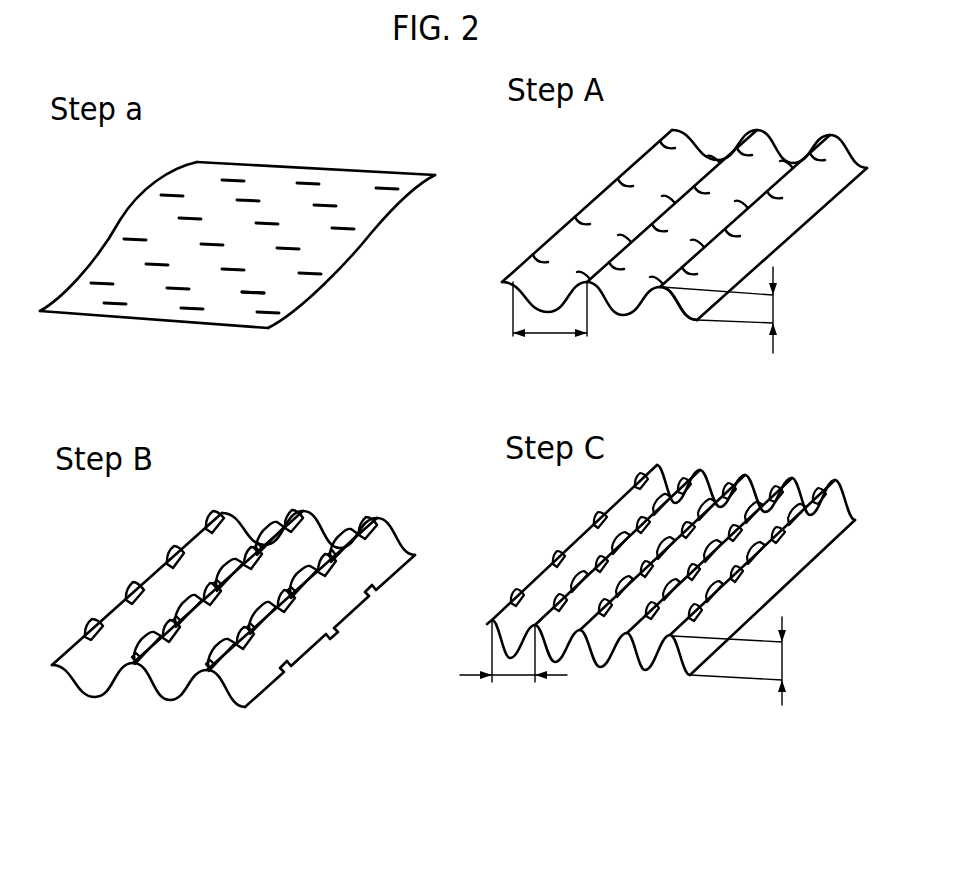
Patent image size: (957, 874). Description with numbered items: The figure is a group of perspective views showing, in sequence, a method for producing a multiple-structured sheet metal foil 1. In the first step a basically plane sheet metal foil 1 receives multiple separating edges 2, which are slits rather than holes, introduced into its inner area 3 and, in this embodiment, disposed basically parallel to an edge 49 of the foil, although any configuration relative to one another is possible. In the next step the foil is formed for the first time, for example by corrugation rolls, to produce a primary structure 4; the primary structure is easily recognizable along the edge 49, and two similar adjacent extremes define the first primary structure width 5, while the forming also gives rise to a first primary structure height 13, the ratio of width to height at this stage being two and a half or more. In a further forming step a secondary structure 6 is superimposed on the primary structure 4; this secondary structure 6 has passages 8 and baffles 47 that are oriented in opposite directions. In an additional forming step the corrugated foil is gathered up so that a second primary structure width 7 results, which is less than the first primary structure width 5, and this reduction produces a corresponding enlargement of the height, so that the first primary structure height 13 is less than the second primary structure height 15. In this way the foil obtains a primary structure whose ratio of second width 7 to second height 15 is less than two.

The sheet metal foil 1 is at (365, 182).
The separating edges 2 is at (314, 178).
The inner area 3 is at (290, 293).
The primary structure 4 is at (770, 128).
The first primary structure width 5 is at (548, 337).
The secondary structure 6 is at (173, 552).
The second primary structure width 7 is at (512, 678).
The passages 8 is at (290, 578).
The first primary structure height 13 is at (775, 307).
The second primary structure height 15 is at (783, 658).
The baffles 47 is at (240, 657).
The edge 49 is at (193, 325).